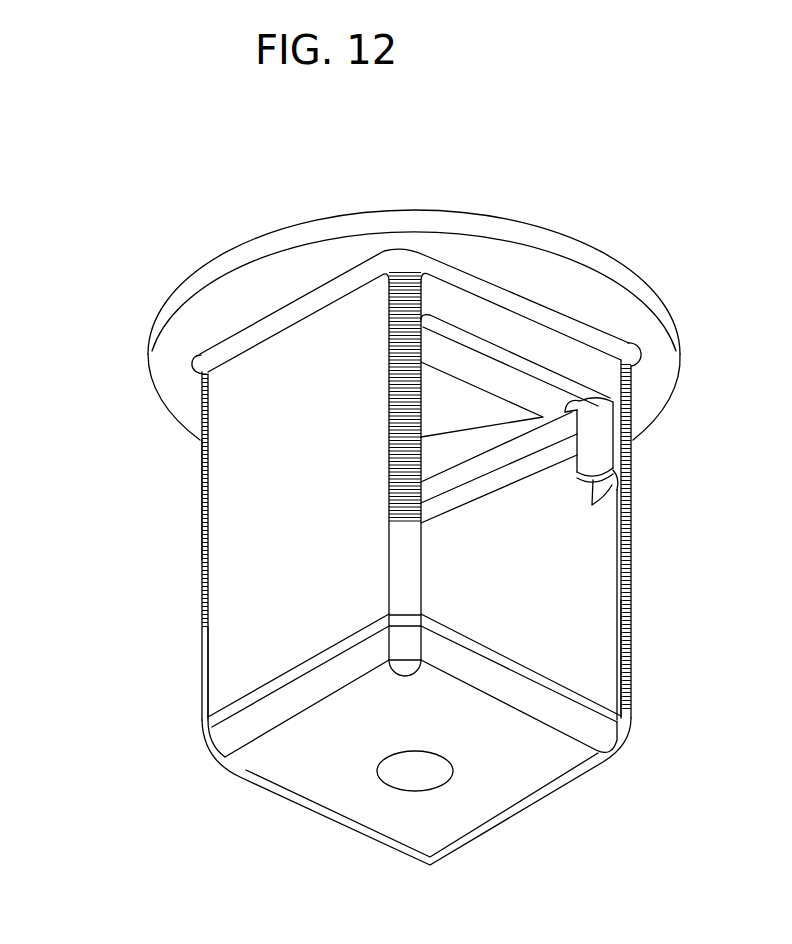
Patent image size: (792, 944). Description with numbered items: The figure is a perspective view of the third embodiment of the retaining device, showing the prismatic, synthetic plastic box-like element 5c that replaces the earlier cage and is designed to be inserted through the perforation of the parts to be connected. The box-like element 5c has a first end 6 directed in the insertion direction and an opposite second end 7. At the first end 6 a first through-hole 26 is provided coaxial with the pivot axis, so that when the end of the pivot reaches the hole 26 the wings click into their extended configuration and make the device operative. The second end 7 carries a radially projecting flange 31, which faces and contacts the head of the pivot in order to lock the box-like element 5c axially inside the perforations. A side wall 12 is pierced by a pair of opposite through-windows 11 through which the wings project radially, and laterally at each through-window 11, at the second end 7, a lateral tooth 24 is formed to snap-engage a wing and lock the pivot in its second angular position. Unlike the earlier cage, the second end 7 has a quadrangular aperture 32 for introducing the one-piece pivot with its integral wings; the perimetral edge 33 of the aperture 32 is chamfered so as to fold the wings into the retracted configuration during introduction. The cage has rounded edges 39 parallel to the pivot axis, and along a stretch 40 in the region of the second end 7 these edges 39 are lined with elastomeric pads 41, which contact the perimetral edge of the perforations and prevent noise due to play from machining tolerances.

The second end 7 is at (540, 286).
The radially projecting flange 31 is at (617, 290).
The side wall 12 is at (257, 388).
The elastomeric pads 41 is at (388, 303).
The stretch 40 is at (218, 476).
The box-like element 5c is at (178, 541).
The rounded edges 39 is at (203, 658).
The through-windows 11 is at (568, 672).
The perimetral edge 33 is at (507, 422).
The quadrangular aperture 32 is at (470, 440).
The lateral tooth 24 is at (592, 450).
The first end 6 is at (533, 780).
The first through-hole 26 is at (401, 777).